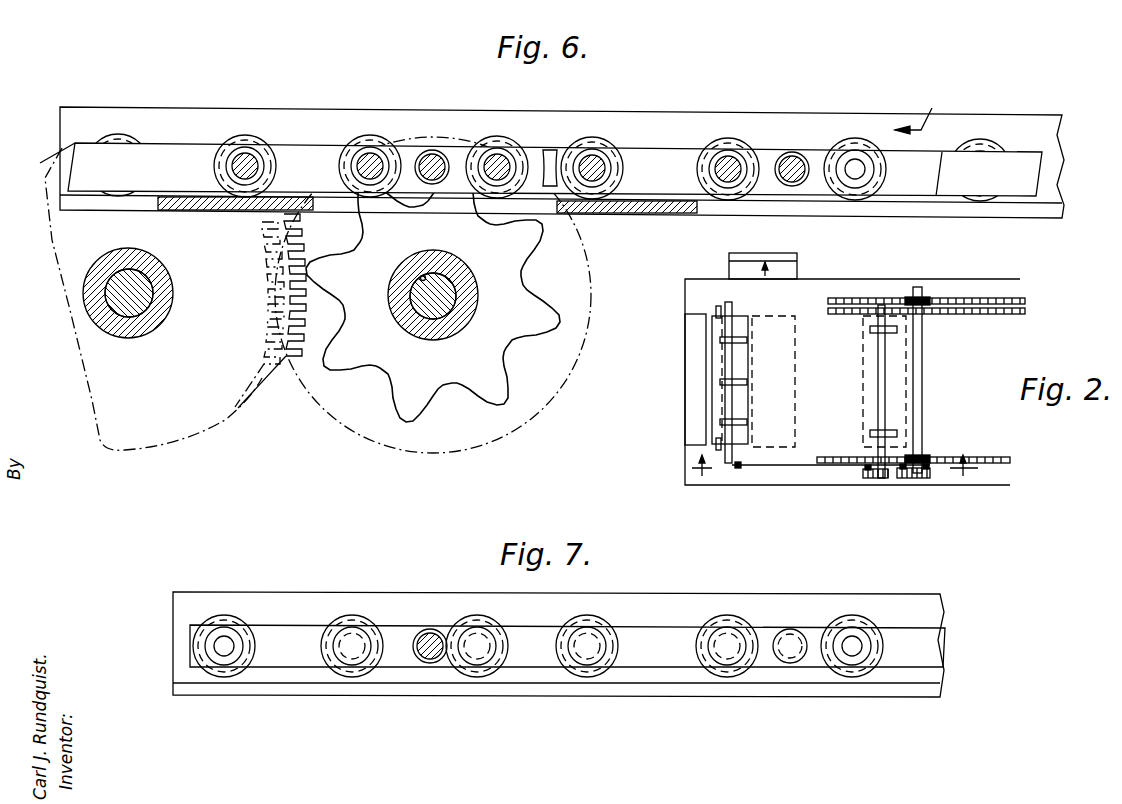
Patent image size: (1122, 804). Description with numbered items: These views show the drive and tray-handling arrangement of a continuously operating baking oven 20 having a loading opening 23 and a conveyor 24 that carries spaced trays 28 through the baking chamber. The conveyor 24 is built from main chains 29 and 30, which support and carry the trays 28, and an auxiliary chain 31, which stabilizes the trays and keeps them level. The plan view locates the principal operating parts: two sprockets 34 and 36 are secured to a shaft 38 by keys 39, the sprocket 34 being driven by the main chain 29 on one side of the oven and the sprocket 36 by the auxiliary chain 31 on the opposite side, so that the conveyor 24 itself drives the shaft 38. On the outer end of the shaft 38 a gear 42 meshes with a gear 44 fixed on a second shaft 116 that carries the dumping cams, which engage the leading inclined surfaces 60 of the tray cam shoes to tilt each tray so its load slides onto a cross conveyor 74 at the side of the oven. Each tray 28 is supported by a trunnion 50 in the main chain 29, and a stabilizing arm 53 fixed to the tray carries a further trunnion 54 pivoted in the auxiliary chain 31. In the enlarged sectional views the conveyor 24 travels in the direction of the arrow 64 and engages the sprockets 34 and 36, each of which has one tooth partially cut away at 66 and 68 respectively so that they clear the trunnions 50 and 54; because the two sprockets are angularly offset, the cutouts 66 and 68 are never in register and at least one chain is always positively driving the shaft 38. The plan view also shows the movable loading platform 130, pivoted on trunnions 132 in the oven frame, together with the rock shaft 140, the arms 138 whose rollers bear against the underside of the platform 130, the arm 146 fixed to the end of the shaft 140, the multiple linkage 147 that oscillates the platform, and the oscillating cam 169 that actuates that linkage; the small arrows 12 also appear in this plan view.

In FIG. 2, the direction arrow 12 is at (841, 473).
In FIG. 2, the baking oven 20 is at (685, 296).
In FIG. 2, the loading opening 23 is at (690, 424).
In FIG. 6, the conveyor 24 is at (893, 203).
In FIG. 2, the tray 28 is at (862, 333).
In FIG. 2, the main chain 29 is at (992, 458).
In FIG. 6, the main chain 30 is at (287, 152).
In FIG. 2, the main chain 30 is at (1015, 312).
In FIG. 2, the auxiliary chain 31 is at (980, 298).
In FIG. 7, the auxiliary chain 31 is at (278, 640).
In FIG. 6, the sprocket 34 is at (405, 423).
In FIG. 2, the sprocket 34 is at (925, 458).
In FIG. 6, the sprocket 36 is at (343, 393).
In FIG. 2, the sprocket 36 is at (925, 300).
In FIG. 6, the shaft 38 is at (417, 303).
In FIG. 2, the shaft 38 is at (922, 342).
In FIG. 6, the key 39 is at (421, 278).
In FIG. 6, the gear 42 is at (300, 387).
In FIG. 2, the gear 42 is at (925, 480).
In FIG. 6, the gear 44 is at (148, 442).
In FIG. 2, the gear 44 is at (873, 480).
In FIG. 6, the trunnion 50 is at (432, 160).
In FIG. 7, the trunnion 50 is at (430, 660).
In FIG. 6, the stabilizing arm 53 is at (555, 152).
In FIG. 7, the stabilizing arm 53 is at (642, 658).
In FIG. 6, the trunnion 54 is at (793, 160).
In FIG. 7, the trunnion 54 is at (790, 660).
In FIG. 2, the leading inclined surface 60 is at (870, 435).
In FIG. 6, the arrow 64 is at (919, 111).
In FIG. 6, the cutout portion 66 is at (416, 178).
In FIG. 6, the cutout portion 68 is at (443, 403).
In FIG. 2, the cross conveyor 74 is at (740, 266).
In FIG. 6, the shaft 116 is at (133, 283).
In FIG. 2, the shaft 116 is at (880, 452).
In FIG. 2, the movable platform 130 is at (717, 366).
In FIG. 2, the trunnion 132 is at (716, 310).
In FIG. 2, the arm 138 is at (745, 385).
In FIG. 2, the rock shaft 140 is at (745, 340).
In FIG. 2, the arm 146 is at (732, 465).
In FIG. 2, the multiple linkage 147 is at (782, 470).
In FIG. 2, the oscillating cam 169 is at (933, 470).